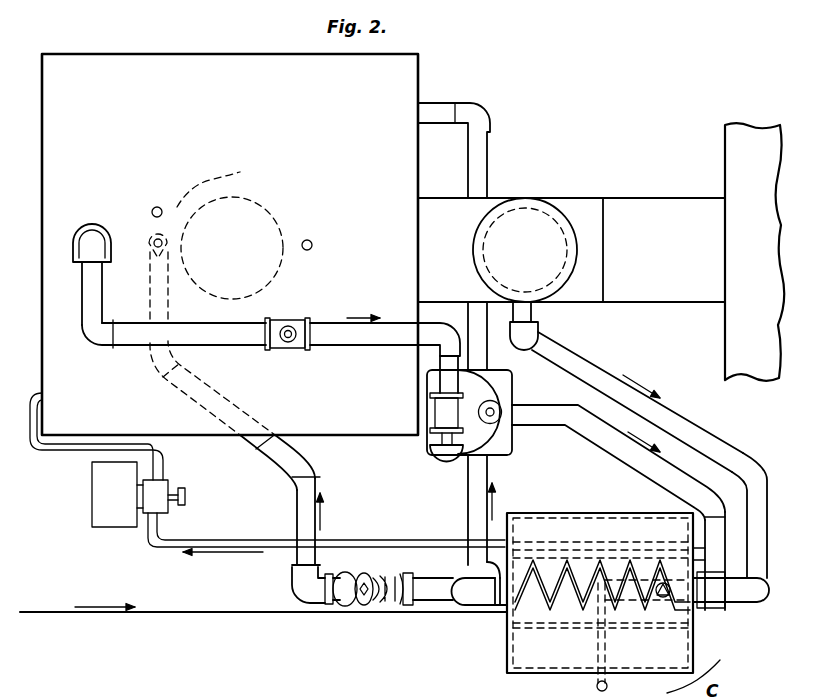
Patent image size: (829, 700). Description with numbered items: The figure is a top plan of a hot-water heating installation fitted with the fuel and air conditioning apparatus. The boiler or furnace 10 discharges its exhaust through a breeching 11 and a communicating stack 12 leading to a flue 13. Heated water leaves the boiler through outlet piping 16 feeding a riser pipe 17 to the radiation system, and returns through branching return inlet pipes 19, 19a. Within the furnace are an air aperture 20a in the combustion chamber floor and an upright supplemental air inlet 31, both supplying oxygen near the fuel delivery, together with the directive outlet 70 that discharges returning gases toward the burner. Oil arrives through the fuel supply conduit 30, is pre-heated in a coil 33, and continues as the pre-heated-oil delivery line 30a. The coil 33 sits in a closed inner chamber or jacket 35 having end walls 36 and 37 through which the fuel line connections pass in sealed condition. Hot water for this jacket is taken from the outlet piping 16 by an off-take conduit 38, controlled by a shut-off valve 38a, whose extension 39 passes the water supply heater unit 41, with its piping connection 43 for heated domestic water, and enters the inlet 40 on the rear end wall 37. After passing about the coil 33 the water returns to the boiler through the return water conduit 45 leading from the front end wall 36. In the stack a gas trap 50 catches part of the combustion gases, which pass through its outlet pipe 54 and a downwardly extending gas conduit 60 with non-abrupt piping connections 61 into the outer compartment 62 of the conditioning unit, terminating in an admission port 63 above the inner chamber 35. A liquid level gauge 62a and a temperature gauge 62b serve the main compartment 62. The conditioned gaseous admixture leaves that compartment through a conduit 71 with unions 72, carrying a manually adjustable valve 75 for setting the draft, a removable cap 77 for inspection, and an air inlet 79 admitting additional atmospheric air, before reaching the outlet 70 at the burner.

The boiler or furnace 10 is at (78, 56).
The breeching 11 is at (439, 203).
The stack 12 is at (627, 203).
The flue 13 is at (725, 152).
The outlet piping 16 is at (122, 346).
The riser pipe 17 is at (289, 326).
The return inlet pipe 19 is at (468, 314).
The return inlet pipe 19a is at (438, 103).
The through aperture 20a is at (312, 245).
The fuel supply conduit 30 is at (244, 613).
The pre-heated-oil delivery line 30a is at (393, 540).
The supplemental air inlet 31 is at (158, 207).
The coil 33 is at (575, 570).
The inner chamber or jacket 35 is at (578, 629).
The end wall or head 36 is at (505, 622).
The end wall or head 37 is at (719, 603).
The off-take conduit 38 is at (376, 346).
The shut-off valve 38a is at (434, 458).
The extension 39 is at (633, 455).
The inlet 40 is at (717, 576).
The water supply heater unit 41 is at (504, 360).
The piping connection 43 is at (496, 410).
The return water conduit 45 is at (468, 494).
The gas trap 50 is at (528, 208).
The outlet pipe 54 is at (532, 311).
The gas conduit 60 is at (675, 418).
The piping connections 61 is at (538, 329).
The outer compartment 62 is at (571, 517).
The liquid level gauge 62a is at (597, 687).
The temperature gauge 62b is at (663, 598).
The admission port 63 is at (617, 572).
The directive outlet 70 is at (167, 258).
The conduit 71 is at (297, 508).
The unions 72 is at (314, 469).
The manually adjustable valve 75 is at (368, 577).
The removable cap 77 is at (345, 573).
The air inlet 79 is at (265, 450).